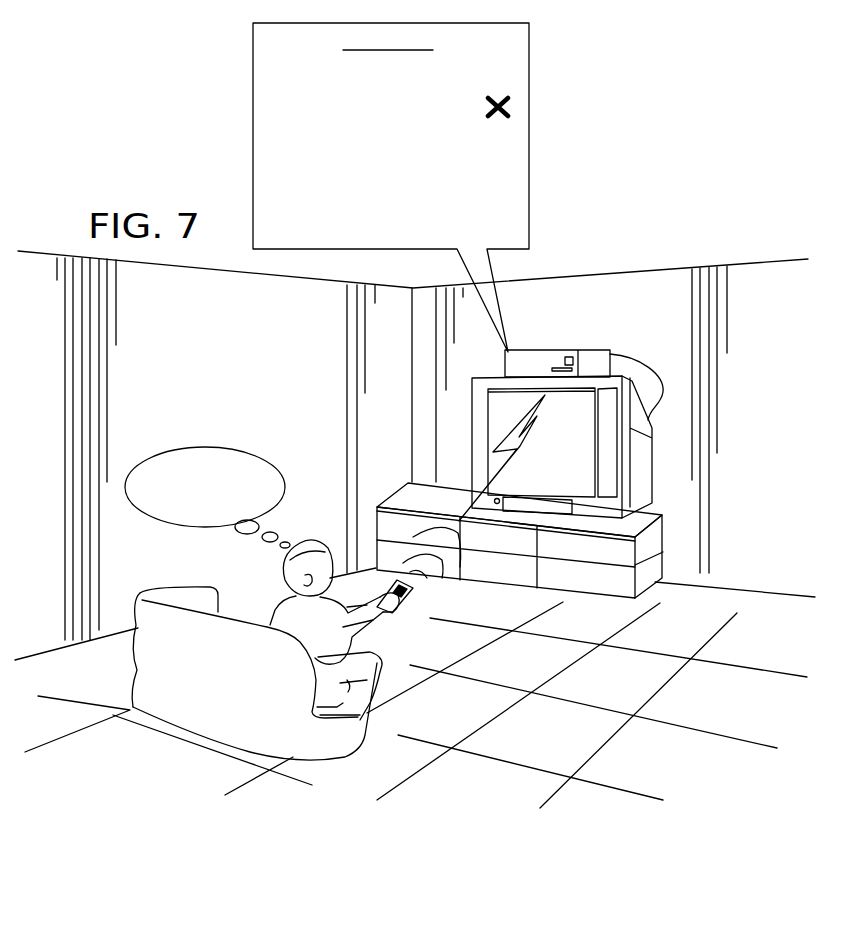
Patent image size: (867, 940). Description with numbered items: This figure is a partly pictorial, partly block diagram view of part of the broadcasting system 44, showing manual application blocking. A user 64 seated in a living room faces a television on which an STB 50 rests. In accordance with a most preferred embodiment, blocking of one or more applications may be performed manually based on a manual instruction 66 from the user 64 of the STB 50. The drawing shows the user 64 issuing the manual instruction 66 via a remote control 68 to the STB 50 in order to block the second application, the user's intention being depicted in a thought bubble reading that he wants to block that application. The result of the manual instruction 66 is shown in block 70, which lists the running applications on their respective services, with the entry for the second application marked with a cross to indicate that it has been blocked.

The broadcasting system 44 is at (546, 320).
The STB 50 is at (505, 364).
The user 64 is at (283, 597).
The manual instruction 66 is at (488, 425).
The remote control 68 is at (413, 590).
The block 70 is at (530, 198).